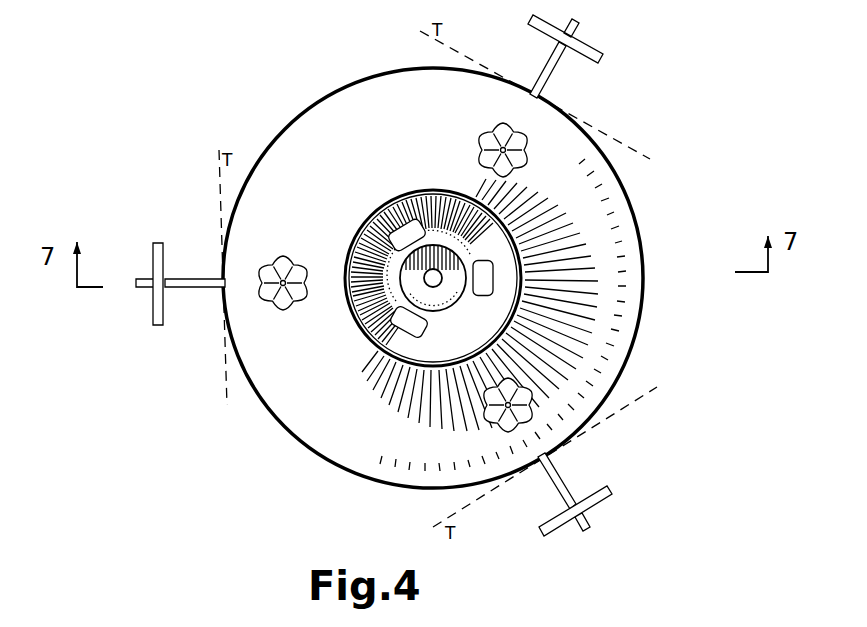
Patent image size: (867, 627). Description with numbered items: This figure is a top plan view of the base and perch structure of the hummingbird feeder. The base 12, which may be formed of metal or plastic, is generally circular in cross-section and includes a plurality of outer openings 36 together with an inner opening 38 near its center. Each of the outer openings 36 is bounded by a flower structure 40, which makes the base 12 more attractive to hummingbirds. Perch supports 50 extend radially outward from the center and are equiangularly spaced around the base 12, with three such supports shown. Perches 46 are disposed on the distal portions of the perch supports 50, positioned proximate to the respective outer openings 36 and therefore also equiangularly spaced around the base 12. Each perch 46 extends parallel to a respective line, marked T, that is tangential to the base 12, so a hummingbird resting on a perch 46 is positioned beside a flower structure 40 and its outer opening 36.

The base 12 is at (669, 209).
The outer openings 36 is at (281, 306).
The inner opening 38 is at (436, 300).
The flower structures 40 is at (283, 258).
The perches 46 is at (160, 243).
The perch supports 50 is at (193, 290).